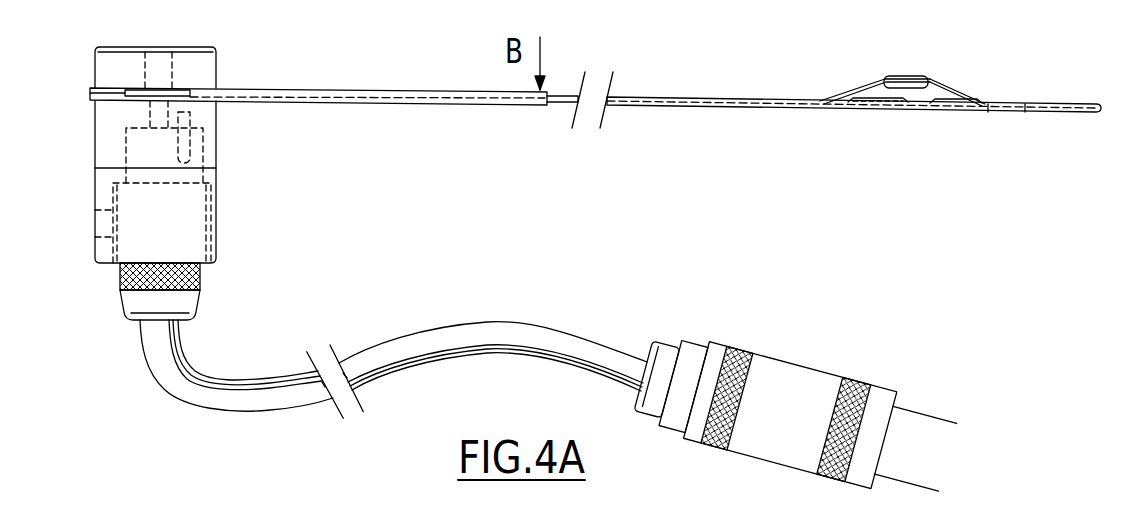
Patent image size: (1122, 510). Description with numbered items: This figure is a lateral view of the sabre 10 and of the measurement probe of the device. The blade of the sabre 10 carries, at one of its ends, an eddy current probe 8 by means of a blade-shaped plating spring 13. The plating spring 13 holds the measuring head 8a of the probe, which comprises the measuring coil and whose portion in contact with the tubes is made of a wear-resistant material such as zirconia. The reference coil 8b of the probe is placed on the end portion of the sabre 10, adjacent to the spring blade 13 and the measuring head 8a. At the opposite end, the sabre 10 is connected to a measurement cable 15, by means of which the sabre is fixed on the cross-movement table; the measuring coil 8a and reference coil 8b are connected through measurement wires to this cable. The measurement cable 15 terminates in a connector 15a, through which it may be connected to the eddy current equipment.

The eddy current probe 8 is at (932, 70).
The measuring head 8a is at (908, 89).
The reference coil 8b is at (873, 104).
The sabre 10 is at (713, 98).
The blade-shaped plating spring 13 is at (961, 91).
The measurement cable 15 is at (178, 382).
The connector 15a is at (800, 377).